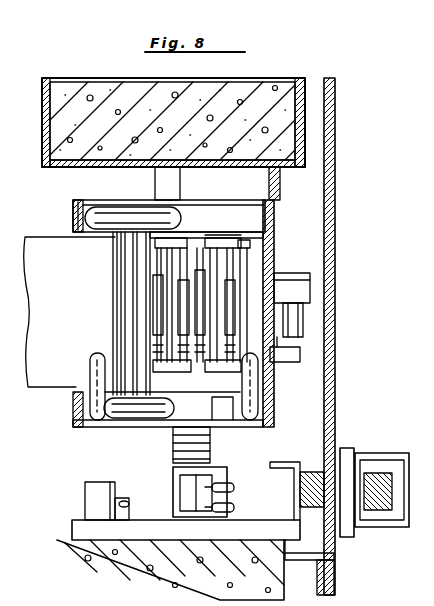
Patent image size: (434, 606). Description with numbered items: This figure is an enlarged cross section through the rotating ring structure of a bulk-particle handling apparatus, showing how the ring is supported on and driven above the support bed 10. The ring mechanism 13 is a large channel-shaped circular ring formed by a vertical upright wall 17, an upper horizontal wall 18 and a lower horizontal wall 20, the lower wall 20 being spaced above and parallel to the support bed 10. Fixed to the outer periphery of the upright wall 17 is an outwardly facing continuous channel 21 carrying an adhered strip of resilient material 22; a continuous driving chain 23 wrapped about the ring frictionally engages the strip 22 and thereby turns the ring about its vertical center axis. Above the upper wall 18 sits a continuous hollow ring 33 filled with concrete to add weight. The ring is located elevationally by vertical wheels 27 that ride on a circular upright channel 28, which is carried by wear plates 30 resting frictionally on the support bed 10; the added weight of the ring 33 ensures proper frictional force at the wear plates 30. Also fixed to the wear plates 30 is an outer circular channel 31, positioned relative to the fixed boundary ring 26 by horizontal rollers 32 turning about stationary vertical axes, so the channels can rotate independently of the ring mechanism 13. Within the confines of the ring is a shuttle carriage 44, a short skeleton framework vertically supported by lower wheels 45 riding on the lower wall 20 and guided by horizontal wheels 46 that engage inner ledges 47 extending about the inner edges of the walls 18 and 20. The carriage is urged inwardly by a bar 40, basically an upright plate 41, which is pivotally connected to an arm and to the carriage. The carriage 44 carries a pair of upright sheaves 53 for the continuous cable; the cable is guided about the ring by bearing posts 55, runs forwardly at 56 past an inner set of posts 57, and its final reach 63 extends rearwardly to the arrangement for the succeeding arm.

The support bed 10 is at (58, 538).
The ring mechanism 13 is at (68, 216).
The upright wall 17 is at (275, 246).
The upper horizontal wall 18 is at (104, 204).
The lower horizontal wall 20 is at (80, 427).
The continuous channel 21 is at (278, 283).
The strip of resilient material 22 is at (302, 299).
The driving chain 23 is at (305, 336).
The boundary ring 26 is at (335, 146).
The vertical wheels 27 is at (212, 441).
The circular upright channel 28 is at (173, 476).
The wear plates 30 is at (72, 535).
The outer circular channel 31 is at (301, 462).
The horizontal rollers 32 is at (375, 512).
The continuous hollow ring 33 is at (56, 168).
The bar 40 is at (28, 340).
The upright plate 41 is at (84, 302).
The shuttle carriage 44 is at (196, 240).
The lower wheels 45 is at (90, 368).
The horizontal wheels 46 is at (133, 208).
The inner ledges 47 is at (76, 226).
The upright sheaves 53 is at (222, 237).
The bearing posts 55 is at (228, 479).
The forward cable reach 56 is at (128, 510).
The inner posts 57 is at (85, 496).
The final cable reach 63 is at (252, 250).